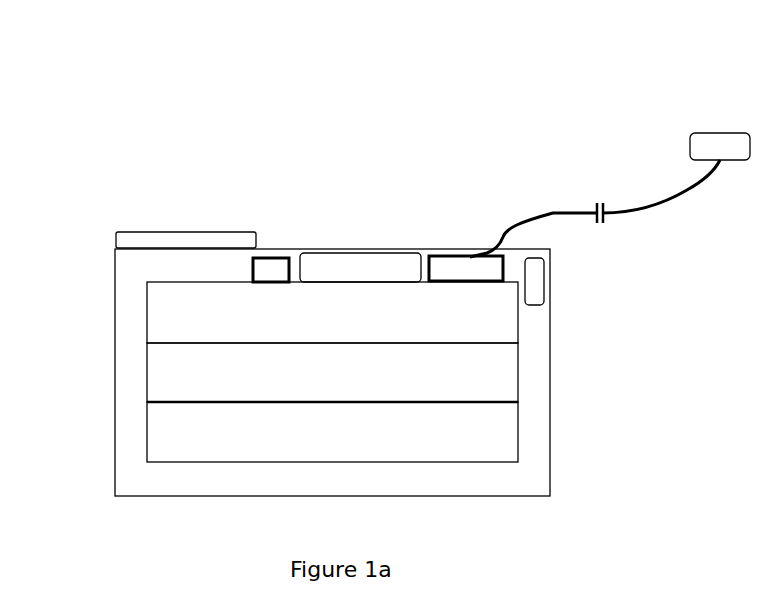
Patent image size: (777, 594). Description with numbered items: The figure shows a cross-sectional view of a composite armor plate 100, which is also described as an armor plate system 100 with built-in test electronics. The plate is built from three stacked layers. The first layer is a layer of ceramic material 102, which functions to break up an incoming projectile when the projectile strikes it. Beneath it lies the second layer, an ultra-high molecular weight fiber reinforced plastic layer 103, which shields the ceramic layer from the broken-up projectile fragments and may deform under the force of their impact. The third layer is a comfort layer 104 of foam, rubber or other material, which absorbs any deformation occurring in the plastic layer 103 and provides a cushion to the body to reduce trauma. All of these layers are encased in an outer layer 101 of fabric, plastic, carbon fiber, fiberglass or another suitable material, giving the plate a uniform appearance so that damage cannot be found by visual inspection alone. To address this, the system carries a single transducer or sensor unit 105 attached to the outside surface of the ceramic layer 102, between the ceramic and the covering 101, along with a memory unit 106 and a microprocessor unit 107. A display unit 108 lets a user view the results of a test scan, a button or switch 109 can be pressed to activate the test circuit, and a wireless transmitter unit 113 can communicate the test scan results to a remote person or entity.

The composite armor plate 100 is at (377, 252).
The outer layer 101 is at (115, 373).
The layer of ceramic material 102 is at (332, 312).
The ultra-high molecular weight fiber reinforced plastic layer 103 is at (332, 372).
The comfort layer 104 is at (332, 432).
The transducer unit 105 is at (359, 268).
The memory unit 106 is at (271, 270).
The microprocessor unit 107 is at (467, 268).
The display unit 108 is at (183, 240).
The button or switch 109 is at (610, 180).
The wireless transmitter unit 113 is at (533, 282).